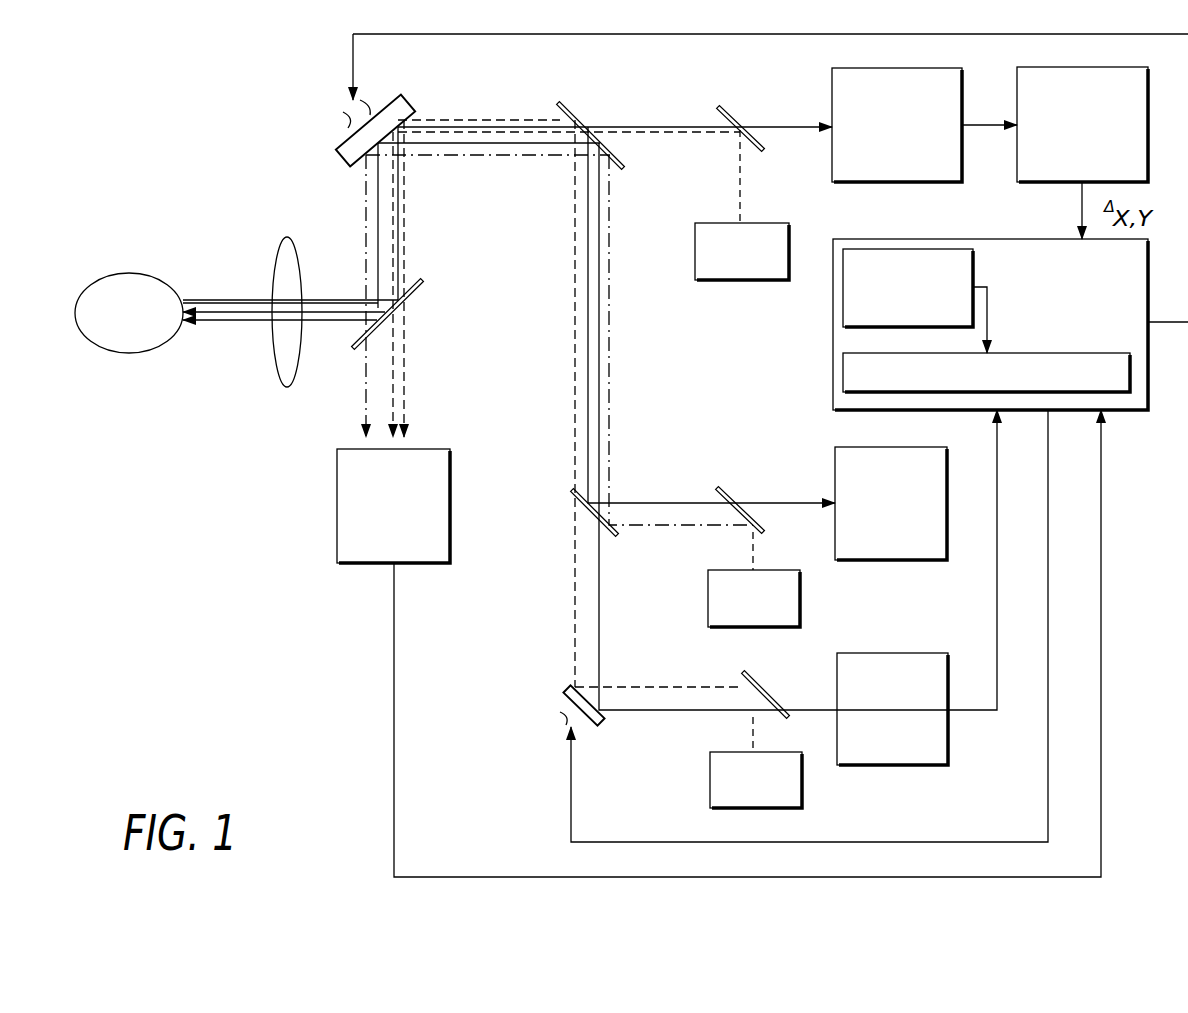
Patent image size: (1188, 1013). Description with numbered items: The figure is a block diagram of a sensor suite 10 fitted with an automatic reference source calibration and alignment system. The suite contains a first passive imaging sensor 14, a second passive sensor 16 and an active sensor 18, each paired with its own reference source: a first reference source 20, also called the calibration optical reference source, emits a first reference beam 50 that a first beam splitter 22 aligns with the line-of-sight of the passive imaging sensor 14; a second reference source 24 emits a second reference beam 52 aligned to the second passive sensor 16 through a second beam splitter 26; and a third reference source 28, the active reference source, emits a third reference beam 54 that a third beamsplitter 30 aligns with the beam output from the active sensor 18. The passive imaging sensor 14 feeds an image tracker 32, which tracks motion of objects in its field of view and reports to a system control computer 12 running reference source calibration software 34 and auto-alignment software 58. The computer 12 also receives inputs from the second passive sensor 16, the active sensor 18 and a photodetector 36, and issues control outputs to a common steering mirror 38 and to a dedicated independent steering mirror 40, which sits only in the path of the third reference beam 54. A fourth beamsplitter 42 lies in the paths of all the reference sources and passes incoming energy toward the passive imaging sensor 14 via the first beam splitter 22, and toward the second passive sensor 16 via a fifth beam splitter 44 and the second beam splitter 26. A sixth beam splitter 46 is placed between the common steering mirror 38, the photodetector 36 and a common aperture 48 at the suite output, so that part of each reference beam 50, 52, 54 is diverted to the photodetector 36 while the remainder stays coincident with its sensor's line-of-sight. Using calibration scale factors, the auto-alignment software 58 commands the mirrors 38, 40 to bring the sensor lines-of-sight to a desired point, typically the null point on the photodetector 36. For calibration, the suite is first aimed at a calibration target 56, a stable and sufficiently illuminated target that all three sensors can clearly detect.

The sensor suite 10 is at (147, 153).
The system control computer 12 is at (953, 239).
The first passive imaging sensor 14 is at (845, 68).
The second passive sensor 16 is at (835, 468).
The active sensor 18 is at (905, 653).
The first reference source 20 is at (760, 223).
The first beam splitter 22 is at (735, 100).
The second reference source 24 is at (800, 603).
The second beam splitter 26 is at (735, 490).
The third reference source 28 is at (710, 783).
The third beamsplitter 30 is at (765, 695).
The image tracker 32 is at (1037, 67).
The reference source calibration software 34 is at (843, 287).
The photodetector 36 is at (427, 449).
The common steering mirror 38 is at (317, 160).
The independent steering mirror 40 is at (550, 693).
The fourth beamsplitter 42 is at (576, 115).
The fifth beam splitter 44 is at (572, 492).
The sixth beam splitter 46 is at (423, 283).
The common aperture 48 is at (275, 365).
The first reference beam 50 is at (740, 162).
The second reference beam 52 is at (755, 548).
The third reference beam 54 is at (692, 687).
The calibration target 56 is at (128, 273).
The auto-alignment software 58 is at (843, 372).